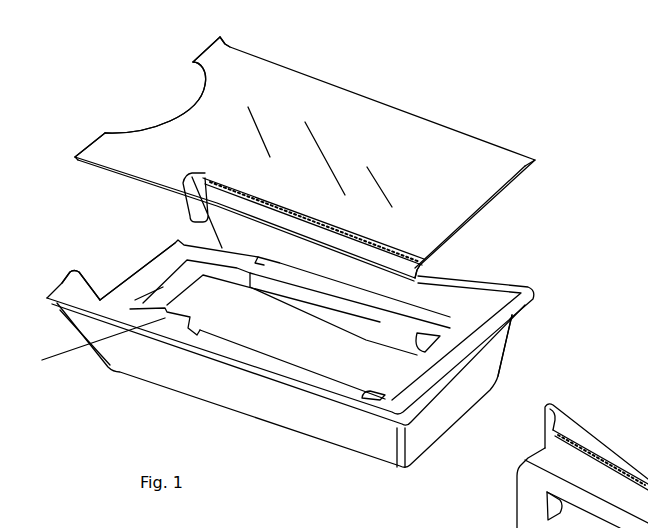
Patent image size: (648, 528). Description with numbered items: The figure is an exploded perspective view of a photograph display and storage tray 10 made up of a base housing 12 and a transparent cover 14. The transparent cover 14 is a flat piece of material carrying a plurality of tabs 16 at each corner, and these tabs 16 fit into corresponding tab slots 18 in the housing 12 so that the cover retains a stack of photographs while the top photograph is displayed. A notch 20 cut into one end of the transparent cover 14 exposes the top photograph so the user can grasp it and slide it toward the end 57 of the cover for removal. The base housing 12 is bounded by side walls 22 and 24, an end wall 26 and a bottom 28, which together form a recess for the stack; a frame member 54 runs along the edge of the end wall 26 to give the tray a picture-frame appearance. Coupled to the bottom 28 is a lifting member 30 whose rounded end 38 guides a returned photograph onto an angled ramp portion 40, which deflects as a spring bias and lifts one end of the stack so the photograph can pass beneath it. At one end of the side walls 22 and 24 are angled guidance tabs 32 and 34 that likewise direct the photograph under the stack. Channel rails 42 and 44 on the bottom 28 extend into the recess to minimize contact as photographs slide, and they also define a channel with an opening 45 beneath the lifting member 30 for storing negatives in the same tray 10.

The photograph display and storage tray 10 is at (565, 250).
The base housing 12 is at (472, 418).
The transparent cover 14 is at (343, 115).
The tabs 16 is at (75, 160).
The tab slots 18 is at (193, 170).
The notch 20 is at (185, 108).
The side wall 22 is at (297, 425).
The side wall 24 is at (467, 298).
The end wall 26 is at (492, 368).
The bottom 28 is at (263, 328).
The lifting member 30 is at (170, 233).
The guidance tab 32 is at (82, 285).
The guidance tab 34 is at (190, 203).
The rounded end 38 is at (147, 253).
The angled ramp portion 40 is at (233, 260).
The channel rail 42 is at (346, 388).
The channel rail 44 is at (397, 333).
The opening 45 is at (91, 345).
The frame member 54 is at (413, 407).
The end 57 is at (203, 45).